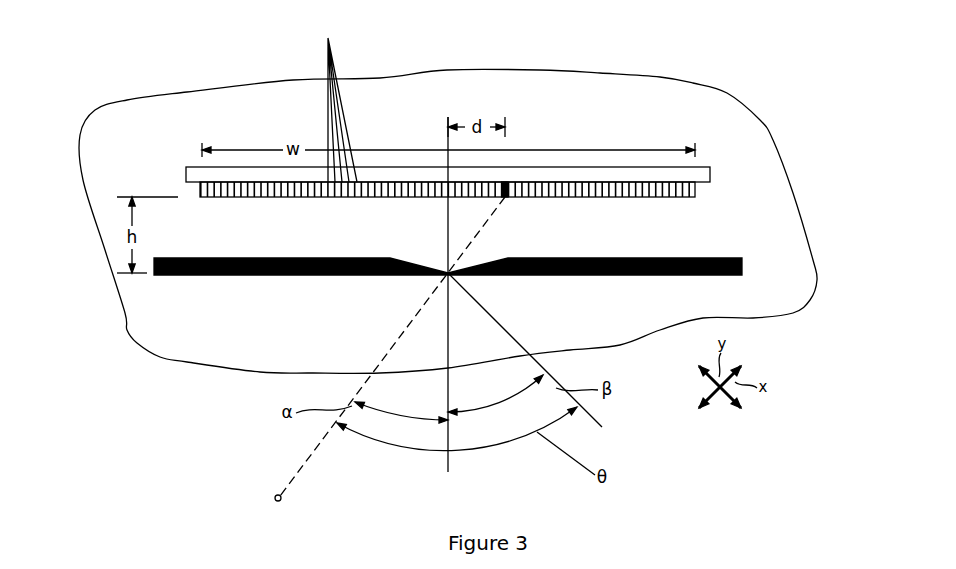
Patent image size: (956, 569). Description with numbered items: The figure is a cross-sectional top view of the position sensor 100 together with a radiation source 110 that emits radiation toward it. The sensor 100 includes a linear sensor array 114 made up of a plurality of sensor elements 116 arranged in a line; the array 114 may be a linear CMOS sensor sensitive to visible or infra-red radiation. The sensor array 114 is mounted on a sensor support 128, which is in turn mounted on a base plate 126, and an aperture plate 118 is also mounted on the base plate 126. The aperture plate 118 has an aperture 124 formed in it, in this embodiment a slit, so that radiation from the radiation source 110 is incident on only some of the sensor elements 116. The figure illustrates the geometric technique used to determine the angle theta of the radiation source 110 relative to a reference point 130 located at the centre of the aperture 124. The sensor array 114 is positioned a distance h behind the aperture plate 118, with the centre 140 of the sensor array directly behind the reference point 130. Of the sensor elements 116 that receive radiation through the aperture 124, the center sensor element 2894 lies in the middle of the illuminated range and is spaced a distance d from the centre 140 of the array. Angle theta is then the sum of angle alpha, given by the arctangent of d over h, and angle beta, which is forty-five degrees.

The position sensor 100 is at (123, 362).
The radiation source 110 is at (283, 500).
The linear sensor array 114 is at (675, 188).
The sensor elements 116 is at (335, 99).
The aperture plate 118 is at (742, 275).
The aperture 124 is at (448, 273).
The reference point 130 is at (222, 413).
The base plate 126 is at (200, 350).
The sensor support 128 is at (683, 173).
The centre of the sensor array 140 is at (448, 182).
The center sensor element 2894 is at (505, 200).